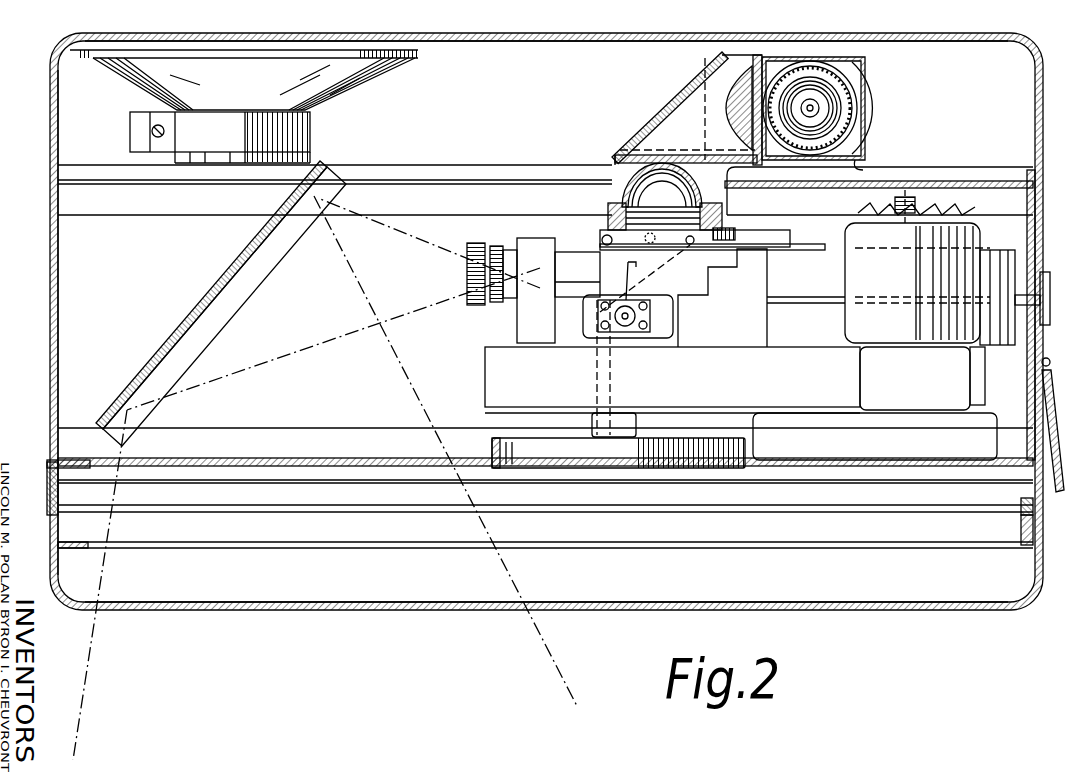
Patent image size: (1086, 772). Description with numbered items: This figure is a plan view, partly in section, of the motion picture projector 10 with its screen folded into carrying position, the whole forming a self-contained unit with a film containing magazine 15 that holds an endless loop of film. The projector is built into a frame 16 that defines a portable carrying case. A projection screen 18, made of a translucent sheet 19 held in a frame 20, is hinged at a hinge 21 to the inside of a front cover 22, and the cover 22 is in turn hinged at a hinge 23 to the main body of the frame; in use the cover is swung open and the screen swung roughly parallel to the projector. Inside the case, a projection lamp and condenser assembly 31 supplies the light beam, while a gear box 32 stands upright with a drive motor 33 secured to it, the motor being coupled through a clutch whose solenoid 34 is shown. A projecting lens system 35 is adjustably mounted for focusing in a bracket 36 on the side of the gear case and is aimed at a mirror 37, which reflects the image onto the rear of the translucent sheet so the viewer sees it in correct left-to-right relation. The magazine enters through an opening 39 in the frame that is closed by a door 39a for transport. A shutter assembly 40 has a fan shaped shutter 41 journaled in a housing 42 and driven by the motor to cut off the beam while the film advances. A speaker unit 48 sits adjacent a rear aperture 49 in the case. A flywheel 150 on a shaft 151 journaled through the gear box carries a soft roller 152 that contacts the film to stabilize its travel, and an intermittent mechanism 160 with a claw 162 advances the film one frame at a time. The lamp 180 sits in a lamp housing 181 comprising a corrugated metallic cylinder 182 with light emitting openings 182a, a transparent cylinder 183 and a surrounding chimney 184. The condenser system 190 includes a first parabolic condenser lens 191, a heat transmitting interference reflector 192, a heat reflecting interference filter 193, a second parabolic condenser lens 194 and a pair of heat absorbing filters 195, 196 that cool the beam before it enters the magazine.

The motion picture projector 10 is at (47, 288).
The film containing magazine 15 is at (1020, 262).
The frame 16 is at (60, 320).
The projection screen 18 is at (313, 498).
The translucent sheet 19 is at (380, 550).
The frame 20 is at (1012, 532).
The hinge 21 is at (1022, 500).
The front cover 22 is at (313, 611).
The hinge 23 is at (46, 466).
The projection lamp and condenser assembly 31 is at (755, 173).
The gear box 32 is at (490, 386).
The drive motor 33 is at (963, 207).
The solenoid 34 is at (865, 381).
The projecting lens system 35 is at (494, 245).
The bracket 36 is at (525, 322).
The mirror 37 is at (265, 262).
The opening 39 is at (1049, 359).
The door 39a is at (1060, 492).
The shutter assembly 40 is at (769, 277).
The fan shaped shutter 41 is at (806, 245).
The housing 42 is at (755, 318).
The speaker unit 48 is at (345, 97).
The rear aperture 49 is at (378, 36).
The flywheel 150 is at (742, 443).
The shaft 151 is at (628, 387).
The soft roller 152 is at (592, 352).
The intermittent mechanism 160 is at (682, 326).
The claw 162 is at (624, 276).
The lamp 180 is at (815, 130).
The lamp housing 181 is at (870, 60).
The corrugated metallic cylinder 182 is at (848, 120).
The openings 182a is at (770, 98).
The transparent cylinder 183 is at (851, 142).
The chimney 184 is at (860, 164).
The condenser system 190 is at (690, 60).
The first parabolic condenser lens 191 is at (737, 66).
The heat transmitting interference reflector 192 is at (632, 140).
The heat reflecting interference filter 193 is at (626, 185).
The second parabolic condenser lens 194 is at (706, 194).
The heat absorbing filter 195 is at (606, 212).
The heat absorbing filter 196 is at (610, 226).